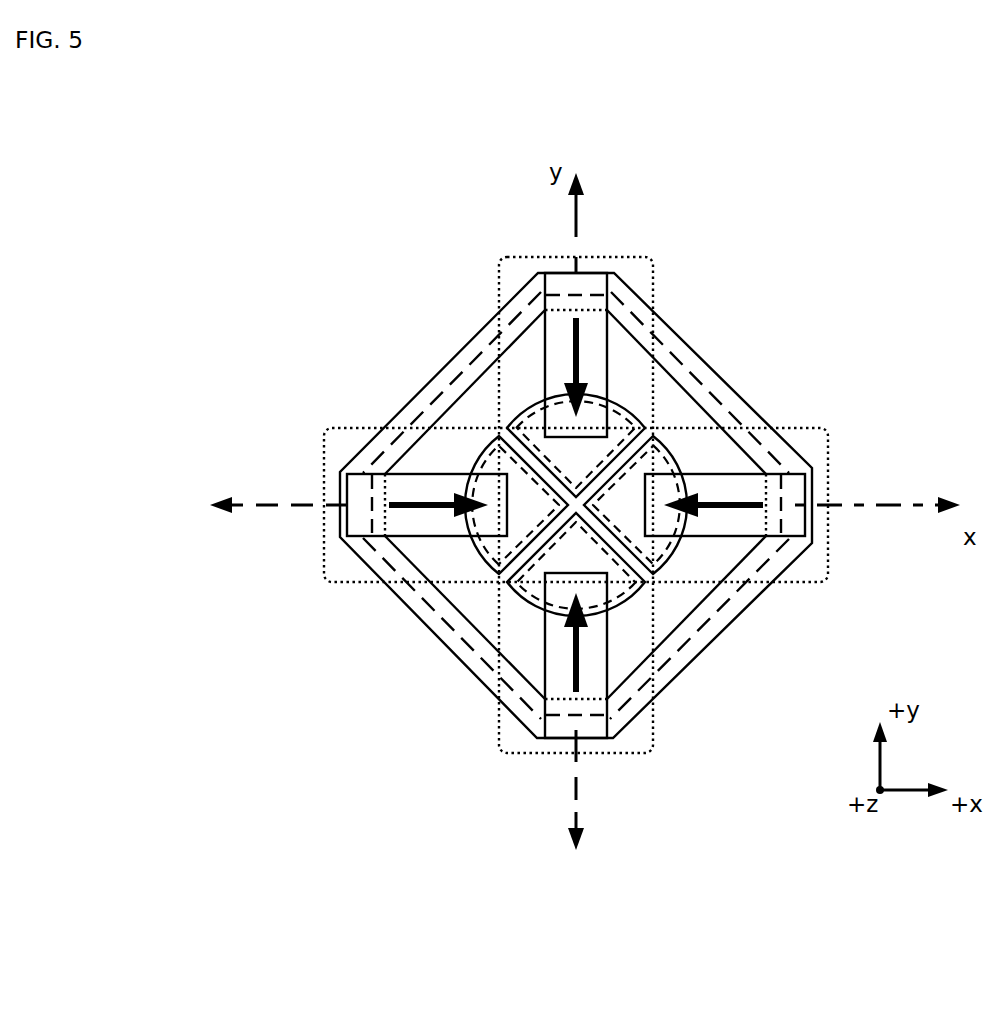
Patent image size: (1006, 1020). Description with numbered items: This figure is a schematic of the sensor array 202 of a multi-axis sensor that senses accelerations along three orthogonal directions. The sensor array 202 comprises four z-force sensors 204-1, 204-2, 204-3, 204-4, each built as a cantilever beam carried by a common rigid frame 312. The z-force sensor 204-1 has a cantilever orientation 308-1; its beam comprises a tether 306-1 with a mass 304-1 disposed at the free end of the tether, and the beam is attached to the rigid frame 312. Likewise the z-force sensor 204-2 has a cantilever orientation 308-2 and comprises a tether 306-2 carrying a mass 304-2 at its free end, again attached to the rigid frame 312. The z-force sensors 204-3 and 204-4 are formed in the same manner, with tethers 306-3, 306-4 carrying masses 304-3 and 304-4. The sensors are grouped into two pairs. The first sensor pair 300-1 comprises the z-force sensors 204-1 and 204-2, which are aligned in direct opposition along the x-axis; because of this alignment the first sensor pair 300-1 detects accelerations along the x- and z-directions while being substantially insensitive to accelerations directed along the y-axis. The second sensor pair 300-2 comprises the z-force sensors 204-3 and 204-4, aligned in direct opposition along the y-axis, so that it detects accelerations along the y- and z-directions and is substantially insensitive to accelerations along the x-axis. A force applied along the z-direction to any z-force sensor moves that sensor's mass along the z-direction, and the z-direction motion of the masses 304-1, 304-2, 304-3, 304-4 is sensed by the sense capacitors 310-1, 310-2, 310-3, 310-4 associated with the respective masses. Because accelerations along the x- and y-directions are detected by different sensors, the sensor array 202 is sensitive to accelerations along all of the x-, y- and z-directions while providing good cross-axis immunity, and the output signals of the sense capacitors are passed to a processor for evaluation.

The sensor array 202 is at (282, 222).
The z-force sensor 204-1 is at (437, 570).
The z-force sensor 204-2 is at (715, 570).
The z-force sensor 204-3 is at (512, 370).
The z-force sensor 204-4 is at (512, 639).
The first sensor pair 300-1 is at (512, 505).
The second sensor pair 300-2 is at (609, 471).
The mass 304-1 is at (424, 459).
The mass 304-2 is at (728, 461).
The mass 304-3 is at (640, 410).
The mass 304-4 is at (640, 600).
The tether 306-1 is at (389, 624).
The tether 306-2 is at (763, 460).
The frame arm 306-3 is at (458, 371).
The frame arm 306-4 is at (598, 655).
The cantilever orientation 308-1 is at (504, 506).
The cantilever orientation 308-2 is at (781, 480).
The sense capacitor 310-1 is at (419, 474).
The sense capacitor 310-2 is at (732, 475).
The sense capacitor 310-3 is at (600, 462).
The sense capacitor 310-4 is at (600, 573).
The rigid frame 312 is at (700, 375).